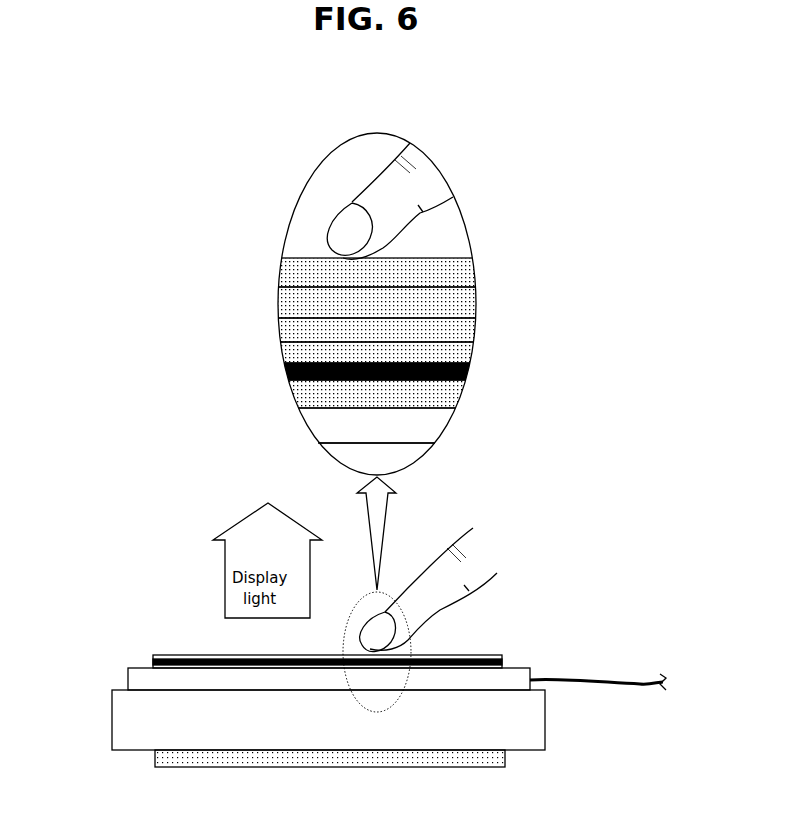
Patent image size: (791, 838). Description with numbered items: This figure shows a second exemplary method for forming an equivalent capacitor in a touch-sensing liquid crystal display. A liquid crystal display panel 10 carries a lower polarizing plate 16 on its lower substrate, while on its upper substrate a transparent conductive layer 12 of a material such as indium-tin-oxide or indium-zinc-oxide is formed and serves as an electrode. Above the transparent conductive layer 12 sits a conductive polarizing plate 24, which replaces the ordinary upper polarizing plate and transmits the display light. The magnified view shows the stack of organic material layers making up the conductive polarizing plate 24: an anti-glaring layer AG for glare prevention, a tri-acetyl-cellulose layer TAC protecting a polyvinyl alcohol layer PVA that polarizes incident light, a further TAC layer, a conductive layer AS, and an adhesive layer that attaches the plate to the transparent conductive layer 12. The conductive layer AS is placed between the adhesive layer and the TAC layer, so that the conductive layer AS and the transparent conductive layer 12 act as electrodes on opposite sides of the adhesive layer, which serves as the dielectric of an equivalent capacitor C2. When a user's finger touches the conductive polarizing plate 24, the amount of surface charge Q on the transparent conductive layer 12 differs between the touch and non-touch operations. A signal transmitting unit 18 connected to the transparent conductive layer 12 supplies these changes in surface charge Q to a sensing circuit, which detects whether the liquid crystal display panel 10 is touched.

The liquid crystal display panel 10 is at (398, 453).
The transparent conductive layer 12 is at (440, 432).
The lower polarizing plate 16 is at (155, 758).
The signal transmitting unit 18 is at (605, 678).
The conductive polarizing plate 24 is at (382, 464).
The conductive layer AS is at (466, 371).
The anti-glaring layer AG is at (476, 272).
The tri-acetyl-cellulose layer TAC is at (476, 300).
The polyvinyl alcohol layer PVA is at (472, 327).
The equivalent capacitor C2 is at (370, 396).
The surface charge Q is at (523, 677).